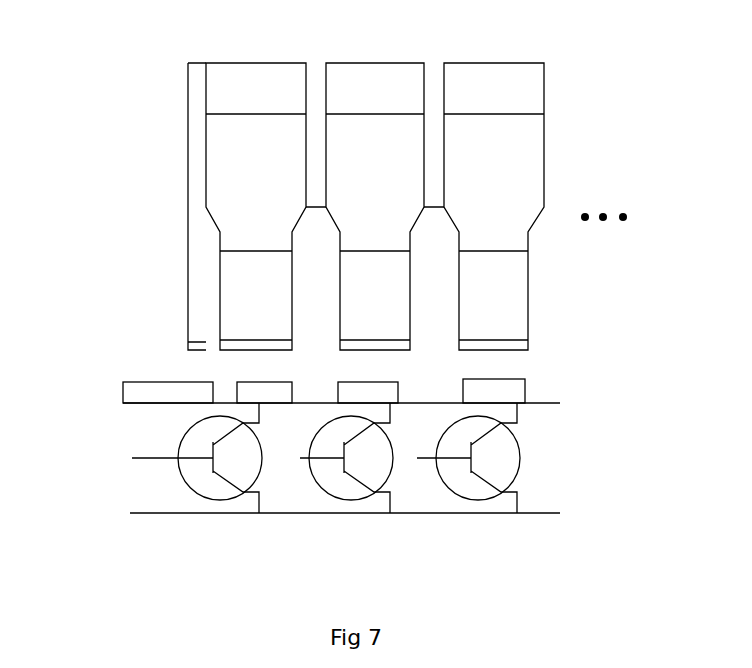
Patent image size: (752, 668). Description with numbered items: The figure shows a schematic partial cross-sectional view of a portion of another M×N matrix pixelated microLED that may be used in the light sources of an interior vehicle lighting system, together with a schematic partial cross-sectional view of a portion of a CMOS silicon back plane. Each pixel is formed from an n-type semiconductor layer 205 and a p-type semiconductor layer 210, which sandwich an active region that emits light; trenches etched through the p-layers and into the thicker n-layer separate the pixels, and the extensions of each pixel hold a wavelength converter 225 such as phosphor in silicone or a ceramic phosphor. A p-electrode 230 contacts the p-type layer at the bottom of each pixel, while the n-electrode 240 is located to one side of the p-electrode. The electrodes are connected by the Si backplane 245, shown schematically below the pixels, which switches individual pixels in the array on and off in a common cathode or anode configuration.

The n-type semiconductor layer 205 is at (525, 183).
The wavelength converter 225 is at (525, 78).
The p-type semiconductor layer 210 is at (517, 296).
The p-electrode 230 is at (525, 348).
The n-electrode 240 is at (200, 253).
The Si backplane 245 is at (137, 513).